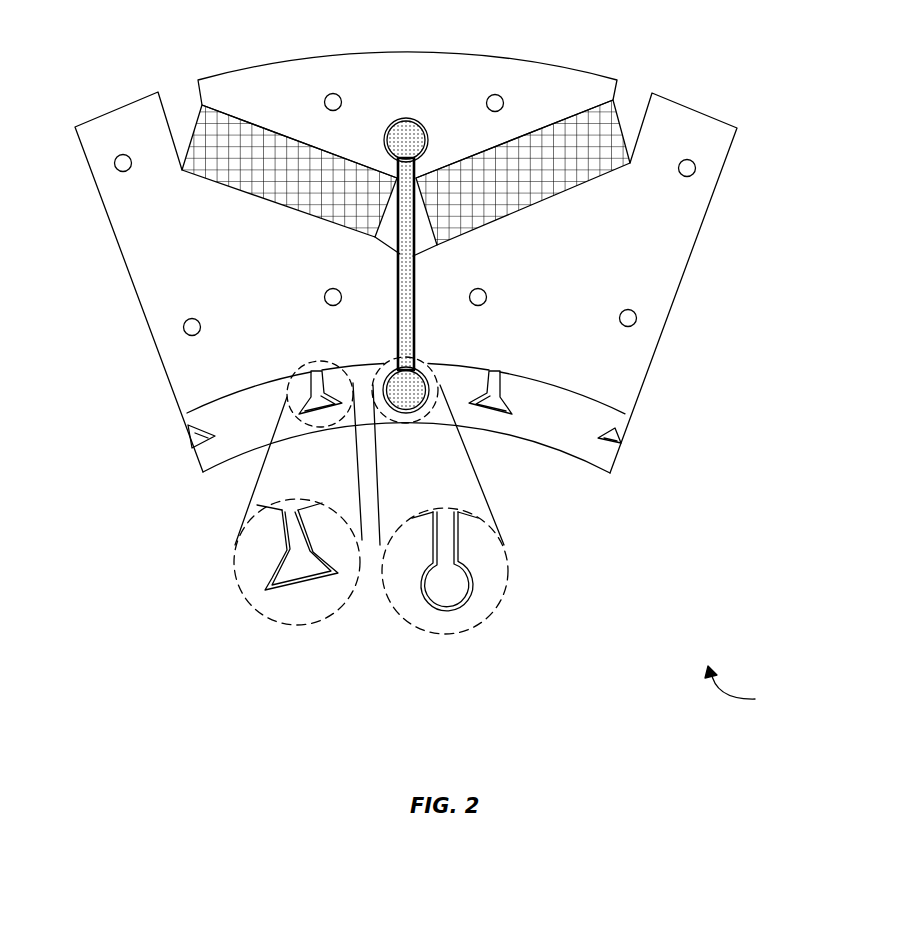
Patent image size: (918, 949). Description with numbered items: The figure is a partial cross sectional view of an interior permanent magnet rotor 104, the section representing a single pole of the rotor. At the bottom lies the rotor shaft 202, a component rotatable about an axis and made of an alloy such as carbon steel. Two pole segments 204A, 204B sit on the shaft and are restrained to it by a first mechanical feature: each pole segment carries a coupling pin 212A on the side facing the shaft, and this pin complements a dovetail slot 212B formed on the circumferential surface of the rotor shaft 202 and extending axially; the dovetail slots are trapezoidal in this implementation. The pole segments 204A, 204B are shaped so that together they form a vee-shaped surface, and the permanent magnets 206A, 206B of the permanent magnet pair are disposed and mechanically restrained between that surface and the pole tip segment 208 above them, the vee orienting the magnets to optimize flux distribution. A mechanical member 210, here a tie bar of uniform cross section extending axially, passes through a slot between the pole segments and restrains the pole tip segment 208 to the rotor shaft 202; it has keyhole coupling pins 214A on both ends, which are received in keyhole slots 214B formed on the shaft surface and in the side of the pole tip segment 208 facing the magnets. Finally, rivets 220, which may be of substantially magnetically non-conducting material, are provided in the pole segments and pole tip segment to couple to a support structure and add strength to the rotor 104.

The IPM rotor 104 is at (754, 689).
The rotor shaft 202 is at (611, 461).
The pole segment 204A is at (171, 366).
The pole segment 204B is at (643, 358).
The permanent magnet 206A is at (234, 112).
The permanent magnet 206B is at (579, 113).
The pole tip segment 208 is at (405, 62).
The mechanical member 210 is at (412, 232).
The coupling pin 212A is at (272, 582).
The dovetail slot 212B is at (313, 585).
The keyhole coupling pin 214A is at (427, 600).
The keyhole slot 214B is at (465, 608).
The rivet 220 is at (116, 160).